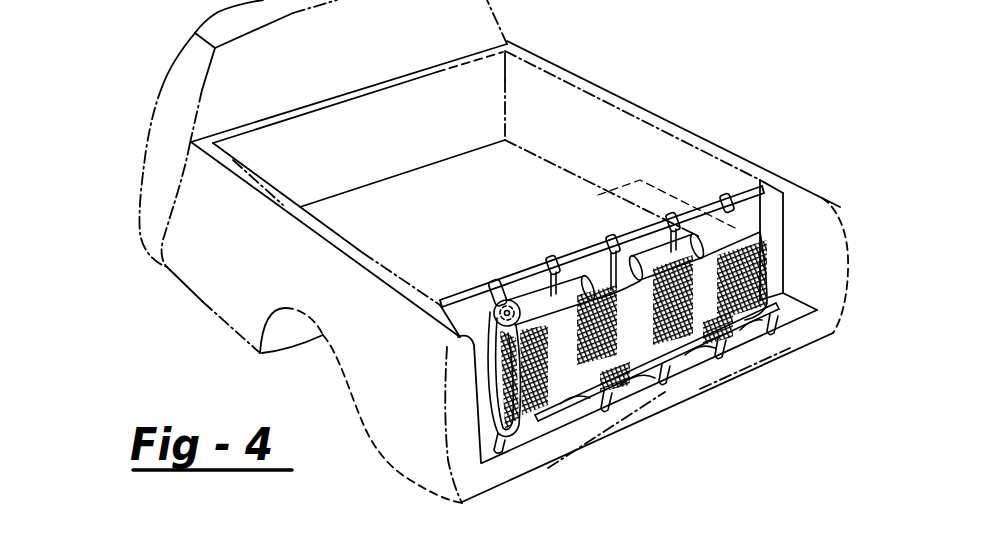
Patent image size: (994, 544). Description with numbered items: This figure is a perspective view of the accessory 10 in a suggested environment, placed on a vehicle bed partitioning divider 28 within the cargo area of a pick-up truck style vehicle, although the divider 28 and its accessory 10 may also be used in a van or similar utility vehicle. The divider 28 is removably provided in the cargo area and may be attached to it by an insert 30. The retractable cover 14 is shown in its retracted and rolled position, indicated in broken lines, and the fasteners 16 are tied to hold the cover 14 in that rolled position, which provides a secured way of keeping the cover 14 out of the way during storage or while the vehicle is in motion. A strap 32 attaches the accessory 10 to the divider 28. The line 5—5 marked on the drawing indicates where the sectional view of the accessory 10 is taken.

The accessory 10 is at (833, 210).
The retractable cover 14 is at (458, 337).
The fasteners 16 is at (715, 204).
The vehicle bed partitioning divider 28 is at (736, 195).
The insert 30 is at (775, 213).
The strap 32 is at (491, 282).
The section line 5— 5 is at (570, 214).